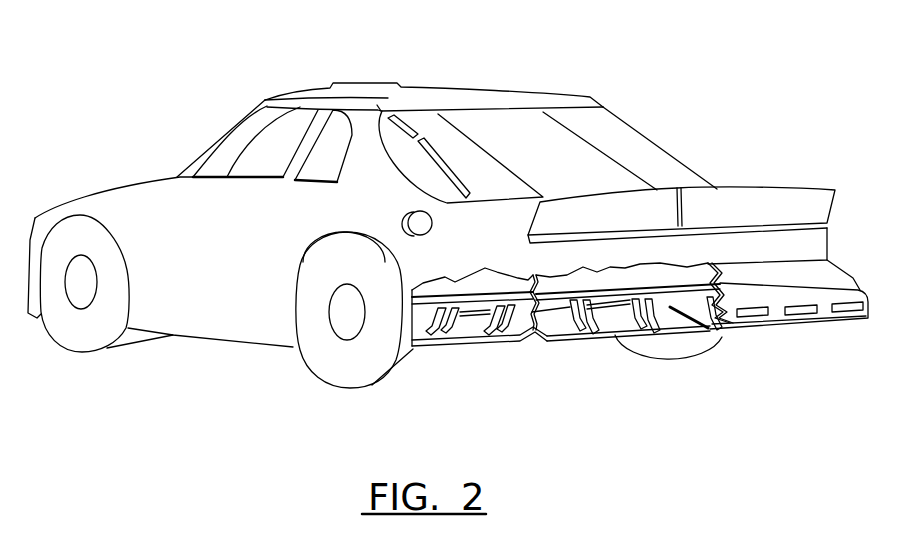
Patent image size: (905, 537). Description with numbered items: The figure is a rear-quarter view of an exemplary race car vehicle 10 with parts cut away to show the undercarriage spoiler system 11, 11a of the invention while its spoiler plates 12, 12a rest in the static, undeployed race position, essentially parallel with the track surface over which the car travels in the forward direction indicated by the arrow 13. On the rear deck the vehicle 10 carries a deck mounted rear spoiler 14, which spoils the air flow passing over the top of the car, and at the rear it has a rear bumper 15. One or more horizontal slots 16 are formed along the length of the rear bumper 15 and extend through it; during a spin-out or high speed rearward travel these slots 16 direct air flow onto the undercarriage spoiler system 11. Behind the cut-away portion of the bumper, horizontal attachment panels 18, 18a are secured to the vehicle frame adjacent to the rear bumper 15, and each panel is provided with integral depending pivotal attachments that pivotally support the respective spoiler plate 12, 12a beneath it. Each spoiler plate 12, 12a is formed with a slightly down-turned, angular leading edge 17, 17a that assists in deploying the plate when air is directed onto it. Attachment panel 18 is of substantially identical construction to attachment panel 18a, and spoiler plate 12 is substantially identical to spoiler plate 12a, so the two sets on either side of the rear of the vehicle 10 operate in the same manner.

The race car vehicle 10 is at (393, 90).
The undercarriage spoiler system 11 is at (687, 333).
The undercarriage spoiler system 11a is at (425, 352).
The spoiler plate 12 is at (608, 327).
The spoiler plate 12a is at (497, 332).
The arrow 13 is at (205, 425).
The deck mounted rear spoiler 14 is at (753, 187).
The rear bumper 15 is at (845, 271).
The horizontal slots 16 is at (810, 315).
The angular leading edge 17 is at (767, 328).
The angular leading edge 17a is at (516, 340).
The horizontal attachment panel 18 is at (638, 286).
The horizontal attachment panel 18a is at (440, 305).